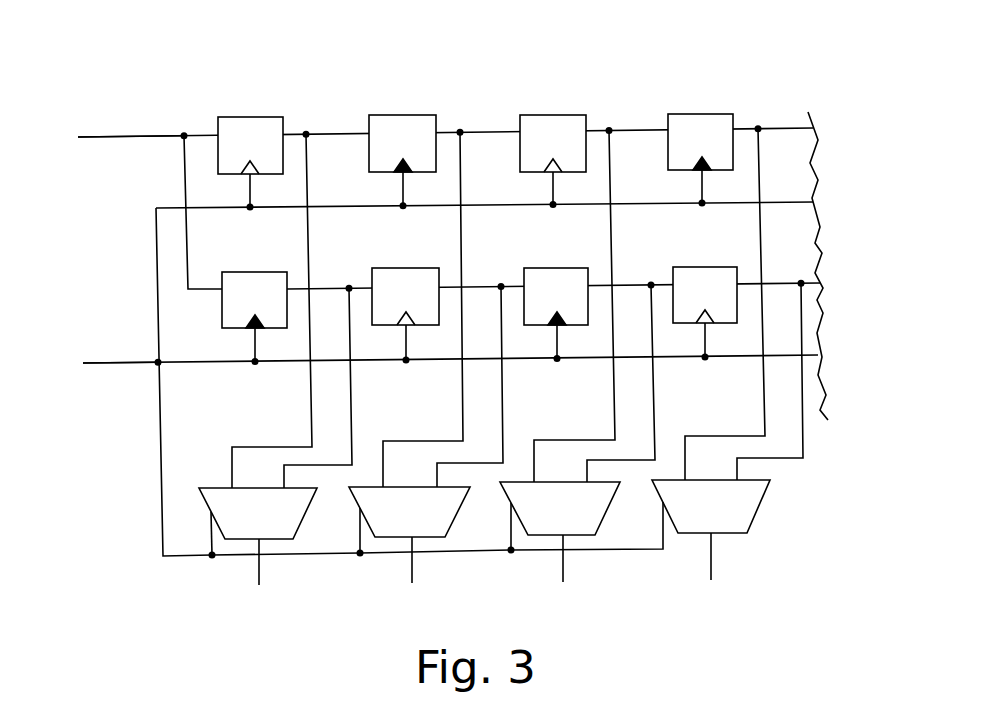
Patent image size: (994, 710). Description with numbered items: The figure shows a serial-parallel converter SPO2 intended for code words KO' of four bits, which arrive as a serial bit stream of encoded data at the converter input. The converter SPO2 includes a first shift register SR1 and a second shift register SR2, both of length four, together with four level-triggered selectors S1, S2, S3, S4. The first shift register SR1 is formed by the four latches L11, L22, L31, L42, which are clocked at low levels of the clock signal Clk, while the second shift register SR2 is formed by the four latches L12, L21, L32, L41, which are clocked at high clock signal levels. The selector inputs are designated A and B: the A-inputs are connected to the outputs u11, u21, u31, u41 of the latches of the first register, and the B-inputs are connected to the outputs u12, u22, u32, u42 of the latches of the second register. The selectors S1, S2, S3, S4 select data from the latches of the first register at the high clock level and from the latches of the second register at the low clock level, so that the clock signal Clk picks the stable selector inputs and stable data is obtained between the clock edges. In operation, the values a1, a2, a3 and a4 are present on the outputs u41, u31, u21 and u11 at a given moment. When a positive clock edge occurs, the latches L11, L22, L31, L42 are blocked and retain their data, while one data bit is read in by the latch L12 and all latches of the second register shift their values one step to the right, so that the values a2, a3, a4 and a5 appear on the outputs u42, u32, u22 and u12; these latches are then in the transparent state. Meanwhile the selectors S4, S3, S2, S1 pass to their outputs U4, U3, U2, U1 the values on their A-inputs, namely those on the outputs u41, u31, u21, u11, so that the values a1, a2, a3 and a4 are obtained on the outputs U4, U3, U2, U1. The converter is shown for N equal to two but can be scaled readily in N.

The serial-parallel converter SPO2 is at (207, 102).
The code words KO' is at (131, 122).
The clock signal Clk is at (120, 348).
The first shift register SR1 is at (834, 243).
The second shift register SR2 is at (832, 87).
The latch L11 is at (280, 380).
The latch L12 is at (250, 162).
The latch L21 is at (402, 160).
The latch L22 is at (405, 314).
The latch L31 is at (591, 375).
The latch L32 is at (553, 159).
The latch L41 is at (700, 158).
The latch L42 is at (705, 312).
The latch output u11 is at (265, 342).
The latch output u12 is at (264, 124).
The latch output u21 is at (411, 128).
The latch output u22 is at (415, 341).
The latch output u31 is at (564, 338).
The latch output u32 is at (559, 132).
The latch output u41 is at (715, 124).
The latch output u42 is at (713, 339).
The selector S1 is at (258, 497).
The selector S2 is at (409, 496).
The selector S3 is at (560, 493).
The selector S4 is at (711, 491).
The selector output U1 is at (279, 563).
The selector output U2 is at (432, 561).
The selector output U3 is at (585, 559).
The selector output U4 is at (732, 557).